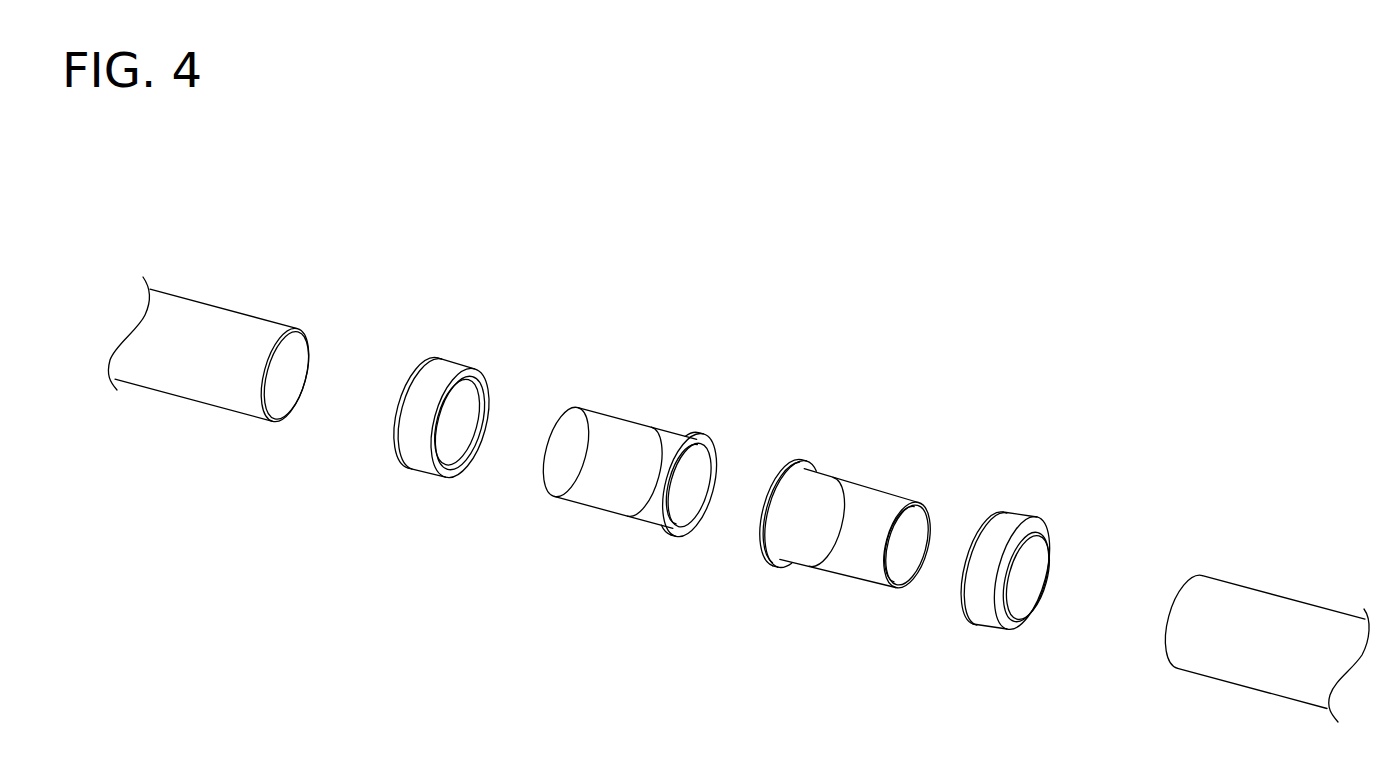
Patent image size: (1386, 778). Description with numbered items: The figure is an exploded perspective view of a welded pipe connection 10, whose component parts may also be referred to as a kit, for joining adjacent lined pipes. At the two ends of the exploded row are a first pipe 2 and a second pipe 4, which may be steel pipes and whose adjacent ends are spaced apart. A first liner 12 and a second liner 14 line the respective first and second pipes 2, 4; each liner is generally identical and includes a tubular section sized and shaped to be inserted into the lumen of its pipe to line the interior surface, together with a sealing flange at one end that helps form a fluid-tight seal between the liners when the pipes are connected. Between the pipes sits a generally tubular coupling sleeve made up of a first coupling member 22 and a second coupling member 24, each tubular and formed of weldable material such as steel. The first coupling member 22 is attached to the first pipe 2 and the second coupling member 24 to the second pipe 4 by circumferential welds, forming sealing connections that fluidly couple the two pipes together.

The welded pipe connection 10 is at (1108, 293).
The first pipe 2 is at (187, 310).
The second pipe 4 is at (1255, 603).
The first liner 12 is at (610, 430).
The second liner 14 is at (867, 498).
The first coupling member 22 is at (453, 363).
The second coupling member 24 is at (1003, 512).